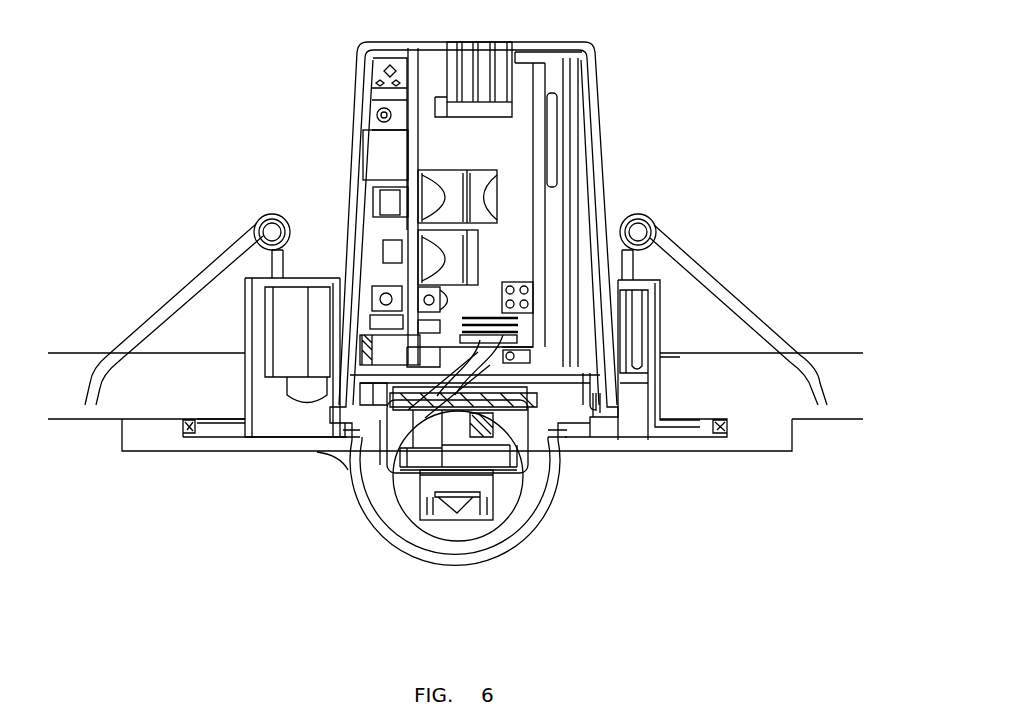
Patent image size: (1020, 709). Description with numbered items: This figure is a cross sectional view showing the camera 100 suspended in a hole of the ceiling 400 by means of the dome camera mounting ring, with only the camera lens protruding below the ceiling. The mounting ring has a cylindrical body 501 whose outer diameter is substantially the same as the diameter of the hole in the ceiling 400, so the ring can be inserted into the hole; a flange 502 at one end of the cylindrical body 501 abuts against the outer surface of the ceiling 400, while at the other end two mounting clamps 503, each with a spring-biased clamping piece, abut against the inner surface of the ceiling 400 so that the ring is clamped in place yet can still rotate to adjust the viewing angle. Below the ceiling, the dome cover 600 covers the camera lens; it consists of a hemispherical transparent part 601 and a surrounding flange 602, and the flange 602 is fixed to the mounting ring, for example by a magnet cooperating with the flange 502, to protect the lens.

The camera 100 is at (588, 100).
The ceiling 400 is at (798, 410).
The cylindrical body 501 is at (248, 323).
The flange 502 is at (217, 433).
The mounting clamp 503 is at (650, 208).
The dome cover 600 is at (445, 483).
The hemispherical transparent part 601 is at (403, 532).
The flange 602 is at (340, 455).